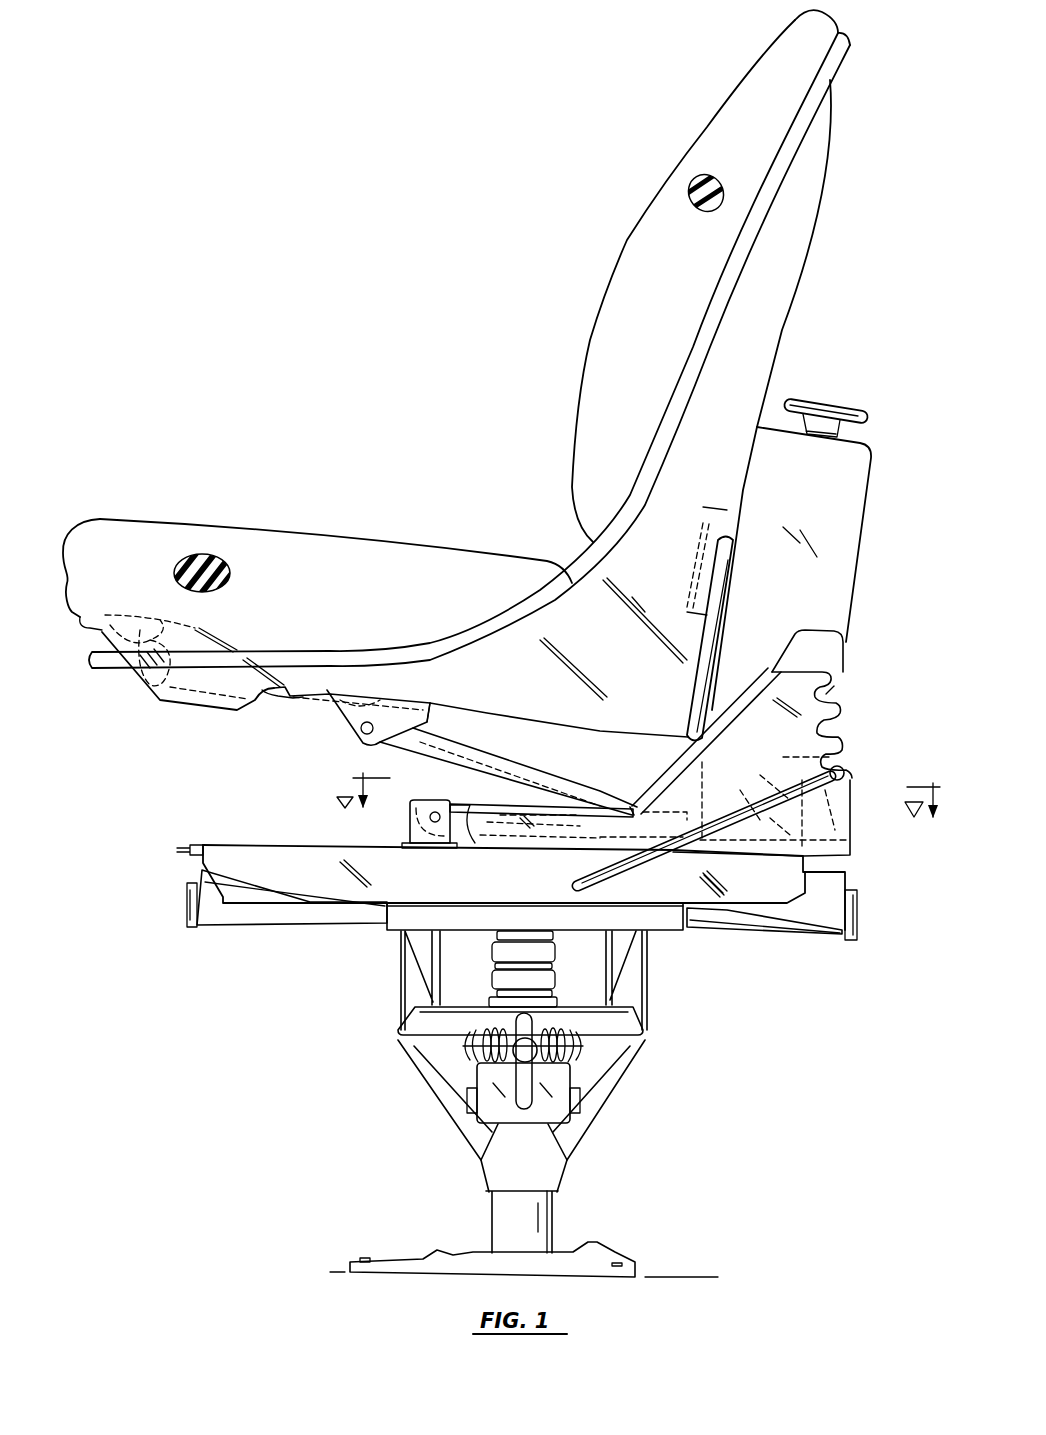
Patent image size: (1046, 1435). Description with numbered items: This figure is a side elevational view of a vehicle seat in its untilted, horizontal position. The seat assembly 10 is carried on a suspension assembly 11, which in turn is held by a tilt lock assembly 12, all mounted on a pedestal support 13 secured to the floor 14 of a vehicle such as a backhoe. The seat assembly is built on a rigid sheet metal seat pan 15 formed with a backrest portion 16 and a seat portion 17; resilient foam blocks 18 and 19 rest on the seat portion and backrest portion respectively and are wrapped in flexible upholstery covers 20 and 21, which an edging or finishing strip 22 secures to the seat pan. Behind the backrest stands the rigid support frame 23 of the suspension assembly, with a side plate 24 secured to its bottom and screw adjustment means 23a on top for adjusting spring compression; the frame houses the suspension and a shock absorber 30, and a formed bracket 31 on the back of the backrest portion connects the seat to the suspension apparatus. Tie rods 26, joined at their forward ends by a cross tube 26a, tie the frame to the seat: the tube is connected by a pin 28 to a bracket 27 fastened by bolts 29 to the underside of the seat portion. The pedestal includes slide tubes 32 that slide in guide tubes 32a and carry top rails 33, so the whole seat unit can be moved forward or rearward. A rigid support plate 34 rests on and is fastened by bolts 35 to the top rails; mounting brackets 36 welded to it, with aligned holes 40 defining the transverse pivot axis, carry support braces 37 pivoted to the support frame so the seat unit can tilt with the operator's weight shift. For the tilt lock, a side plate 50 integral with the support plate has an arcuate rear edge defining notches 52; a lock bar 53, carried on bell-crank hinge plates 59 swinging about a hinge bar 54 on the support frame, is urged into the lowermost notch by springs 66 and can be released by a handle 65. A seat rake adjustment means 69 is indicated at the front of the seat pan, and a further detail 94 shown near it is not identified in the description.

The seat assembly 10 is at (568, 386).
The suspension assembly 11 is at (900, 445).
The tilt lock assembly 12 is at (875, 716).
The pedestal support 13 is at (655, 1100).
The platform or floor 14 is at (680, 1275).
The seat pan 15 is at (633, 669).
The backrest portion 16 is at (828, 166).
The seat portion 17 is at (337, 680).
The block of resilient compressible material 18 is at (208, 555).
The block of resilient compressible material 19 is at (697, 183).
The upholstery cover 20 is at (157, 490).
The upholstery cover 21 is at (706, 126).
The edging or finishing strip 22 is at (88, 659).
The support frame 23 is at (856, 568).
The screw adjustment means 23a is at (850, 400).
The side plate 24 is at (843, 637).
The tie rods 26 is at (505, 765).
The cross tube 26a is at (377, 713).
The bracket 27 is at (430, 720).
The pin 28 is at (361, 733).
The bolts 29 is at (303, 698).
The shock absorber 30 is at (685, 736).
The formed bracket 31 is at (712, 513).
The slide tubes 32 is at (318, 912).
The guide tubes 32a is at (400, 918).
The top rails 33 is at (255, 843).
The support plate 34 is at (558, 850).
The bolts 35 is at (500, 847).
The mounting brackets 36 is at (410, 823).
The support braces 37 is at (547, 807).
The holes 40 is at (436, 812).
The side plate 50 is at (840, 702).
The notches 52 is at (834, 686).
The lock bar 53 is at (857, 776).
The hinge bar 54 is at (849, 845).
The hinge plates 59 is at (845, 771).
The handle 65 is at (645, 866).
The springs 66 is at (762, 777).
The seat rake adjustment means 69 is at (135, 675).
The front nub 94 is at (85, 625).